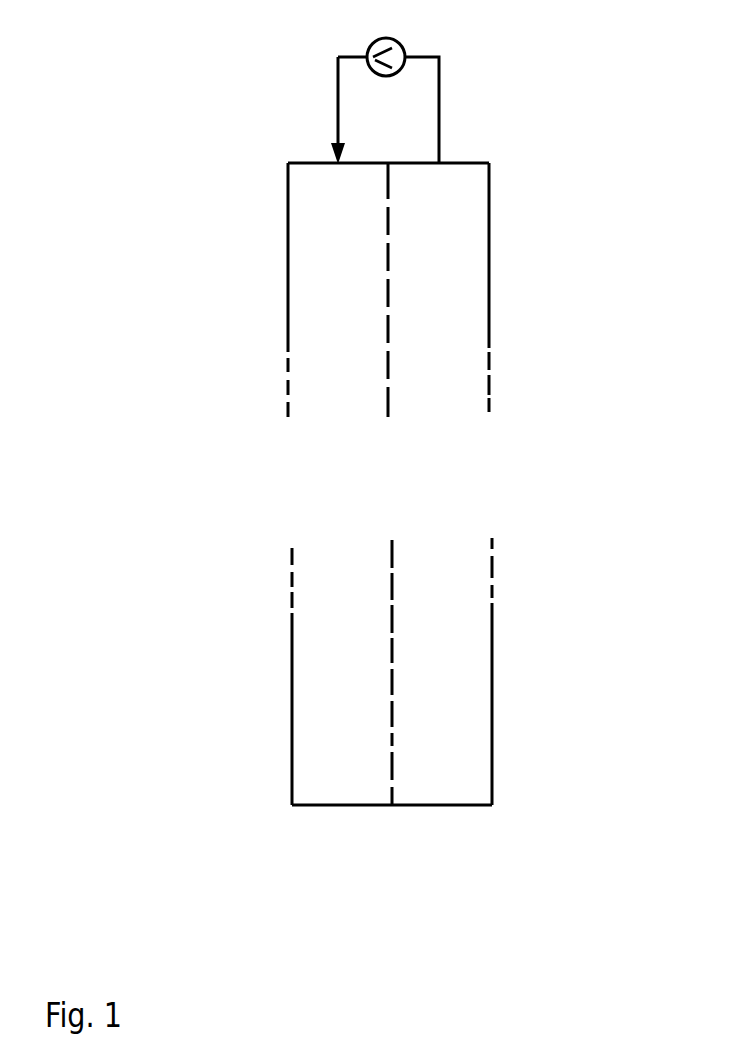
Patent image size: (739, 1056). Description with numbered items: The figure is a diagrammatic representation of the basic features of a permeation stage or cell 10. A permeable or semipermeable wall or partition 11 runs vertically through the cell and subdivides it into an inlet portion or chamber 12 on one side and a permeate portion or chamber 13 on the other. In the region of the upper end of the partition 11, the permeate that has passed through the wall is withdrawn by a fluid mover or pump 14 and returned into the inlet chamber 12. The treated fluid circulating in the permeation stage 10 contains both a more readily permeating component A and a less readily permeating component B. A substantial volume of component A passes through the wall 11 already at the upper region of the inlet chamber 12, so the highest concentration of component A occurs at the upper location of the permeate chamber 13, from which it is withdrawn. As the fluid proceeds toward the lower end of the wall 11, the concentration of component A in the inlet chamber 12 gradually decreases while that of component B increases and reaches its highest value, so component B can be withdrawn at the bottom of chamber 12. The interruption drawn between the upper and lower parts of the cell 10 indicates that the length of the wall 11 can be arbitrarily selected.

The fluid mover or pump 14 is at (402, 43).
The permeation stage or cell 10 is at (492, 287).
The more readily permeating component A is at (438, 198).
The permeable or semipermeable wall or partition 11 is at (392, 627).
The inlet portion or chamber 12 is at (342, 613).
The permeate portion or chamber 13 is at (442, 692).
The less readily permeating component B is at (347, 776).